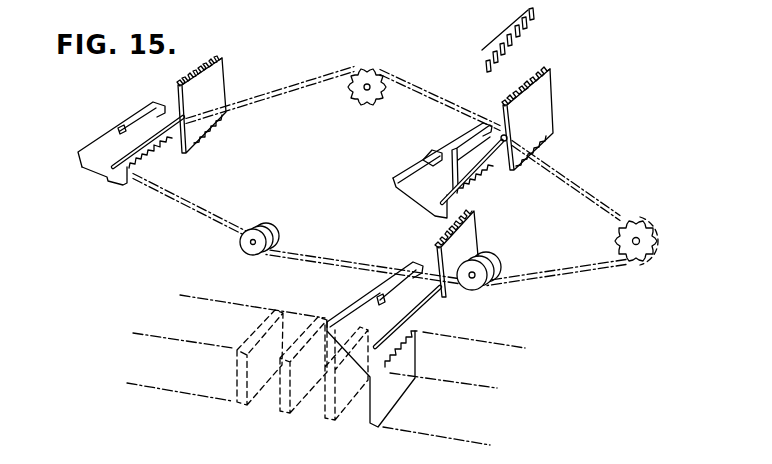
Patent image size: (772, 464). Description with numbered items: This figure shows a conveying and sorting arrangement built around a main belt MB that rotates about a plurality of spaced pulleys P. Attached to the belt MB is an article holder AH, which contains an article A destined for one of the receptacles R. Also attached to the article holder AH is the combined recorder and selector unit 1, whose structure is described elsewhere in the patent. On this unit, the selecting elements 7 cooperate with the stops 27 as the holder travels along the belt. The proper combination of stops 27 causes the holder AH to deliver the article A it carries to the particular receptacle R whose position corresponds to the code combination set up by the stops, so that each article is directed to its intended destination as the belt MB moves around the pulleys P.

The combined recorder and selector unit 1 is at (240, 64).
The selecting elements 7 is at (543, 63).
The stops 27 is at (528, 9).
The article A is at (400, 175).
The article holder AH is at (419, 169).
The main belt MB is at (577, 184).
The pulleys P is at (650, 236).
The receptacles R is at (326, 370).